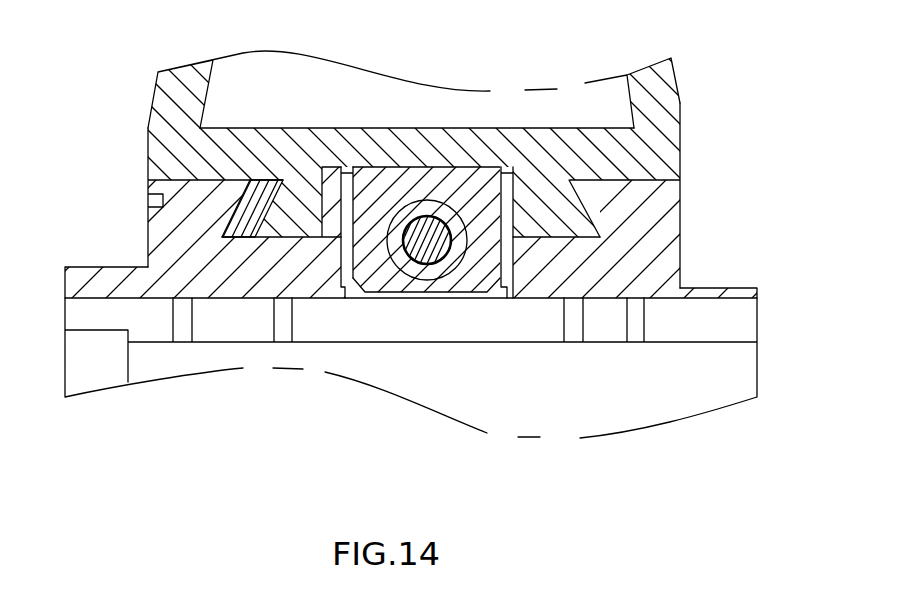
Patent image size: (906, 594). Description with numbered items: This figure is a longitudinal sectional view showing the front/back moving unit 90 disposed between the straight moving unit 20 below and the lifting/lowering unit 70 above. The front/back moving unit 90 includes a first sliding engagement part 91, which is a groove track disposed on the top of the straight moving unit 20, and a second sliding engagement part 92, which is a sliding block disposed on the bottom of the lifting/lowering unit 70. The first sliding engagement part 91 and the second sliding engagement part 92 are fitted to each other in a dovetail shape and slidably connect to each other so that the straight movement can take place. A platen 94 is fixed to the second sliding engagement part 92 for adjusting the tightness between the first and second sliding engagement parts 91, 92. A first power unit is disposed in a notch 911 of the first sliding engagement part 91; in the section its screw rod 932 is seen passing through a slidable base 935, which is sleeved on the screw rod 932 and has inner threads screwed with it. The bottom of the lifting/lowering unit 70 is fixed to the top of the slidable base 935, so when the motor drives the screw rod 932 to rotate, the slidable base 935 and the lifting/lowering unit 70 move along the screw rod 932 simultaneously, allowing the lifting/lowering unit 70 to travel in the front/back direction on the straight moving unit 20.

The straight moving unit 20 is at (756, 360).
The lifting/lowering unit 70 is at (680, 102).
The front/back moving unit 90 is at (144, 240).
The first sliding engagement part 91 is at (627, 270).
The notch 911 is at (345, 258).
The second sliding engagement part 92 is at (570, 218).
The screw rod 932 is at (436, 250).
The slidable base 935 is at (445, 190).
The platen 94 is at (257, 205).